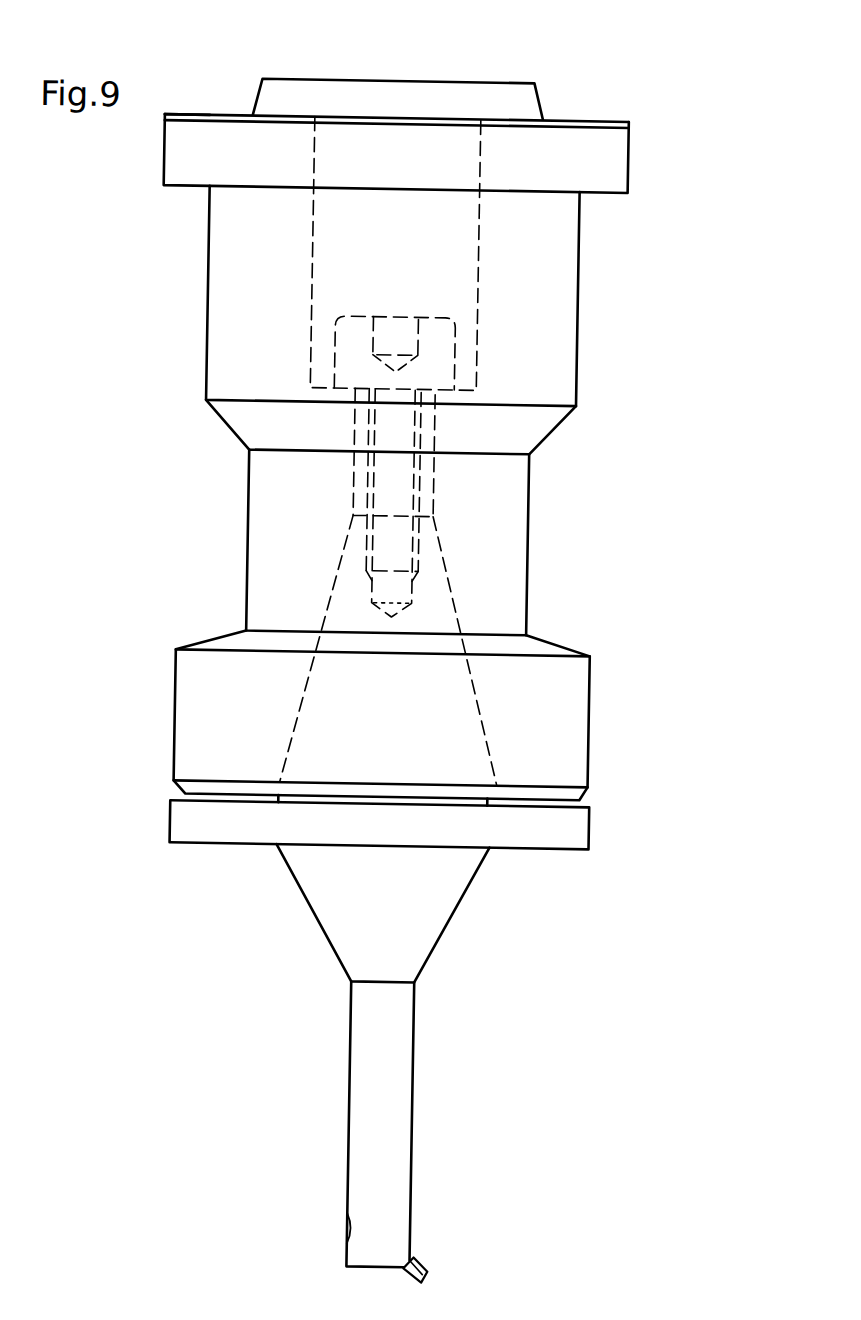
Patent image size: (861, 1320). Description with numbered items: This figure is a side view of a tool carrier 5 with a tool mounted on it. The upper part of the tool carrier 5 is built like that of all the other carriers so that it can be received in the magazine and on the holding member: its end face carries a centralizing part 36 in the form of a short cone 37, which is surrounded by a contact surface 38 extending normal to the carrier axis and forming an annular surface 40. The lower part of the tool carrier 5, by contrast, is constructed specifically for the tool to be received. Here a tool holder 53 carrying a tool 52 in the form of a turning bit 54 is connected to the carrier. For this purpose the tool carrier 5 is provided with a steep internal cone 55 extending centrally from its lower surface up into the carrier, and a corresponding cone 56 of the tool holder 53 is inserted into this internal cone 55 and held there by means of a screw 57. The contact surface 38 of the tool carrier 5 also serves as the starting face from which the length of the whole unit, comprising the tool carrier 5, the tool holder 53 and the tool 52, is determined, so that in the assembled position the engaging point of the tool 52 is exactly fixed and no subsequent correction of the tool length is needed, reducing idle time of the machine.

The tool carrier 5 is at (556, 292).
The centralizing part 36 is at (537, 92).
The short cone 37 is at (533, 110).
The contact surface 38 is at (595, 117).
The annular surface 40 is at (193, 113).
The tool 52 is at (413, 1277).
The tool holder 53 is at (438, 911).
The turning bit 54 is at (424, 1262).
The steep internal cone 55 is at (328, 579).
The cone 56 is at (448, 584).
The screw 57 is at (329, 344).